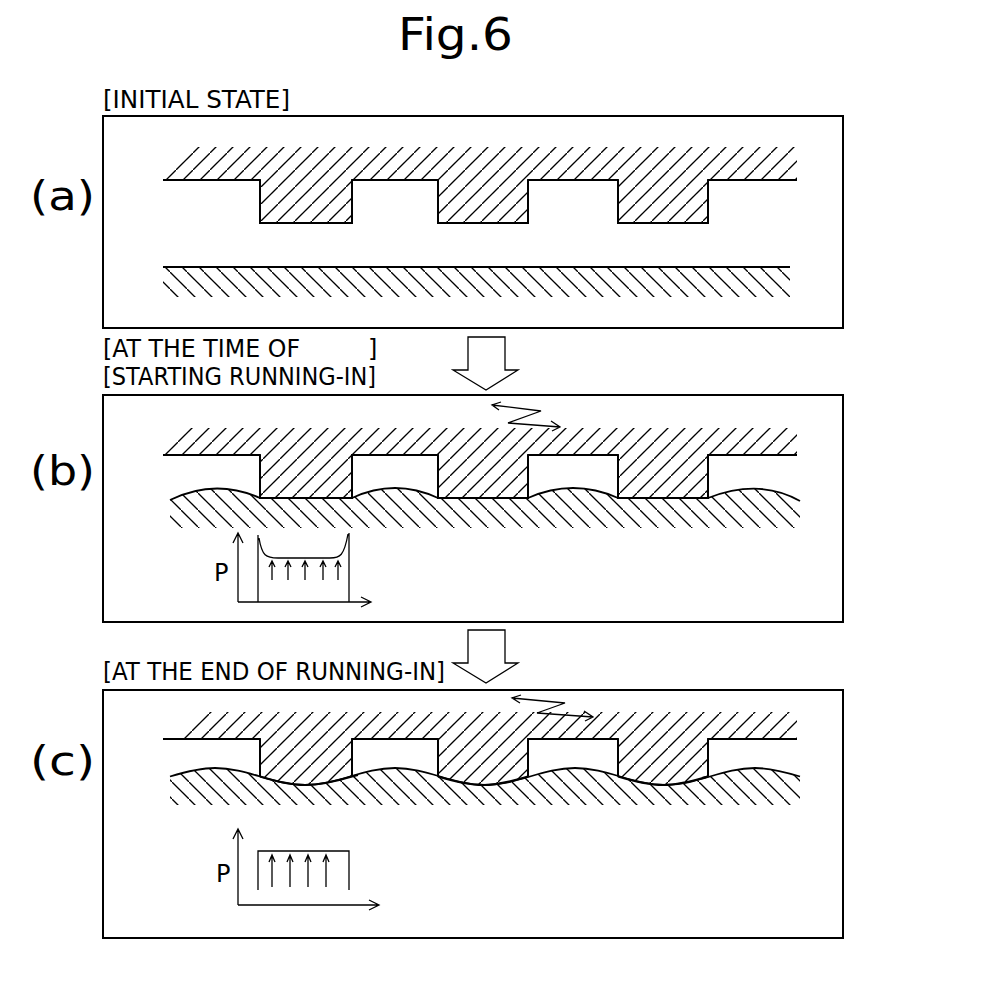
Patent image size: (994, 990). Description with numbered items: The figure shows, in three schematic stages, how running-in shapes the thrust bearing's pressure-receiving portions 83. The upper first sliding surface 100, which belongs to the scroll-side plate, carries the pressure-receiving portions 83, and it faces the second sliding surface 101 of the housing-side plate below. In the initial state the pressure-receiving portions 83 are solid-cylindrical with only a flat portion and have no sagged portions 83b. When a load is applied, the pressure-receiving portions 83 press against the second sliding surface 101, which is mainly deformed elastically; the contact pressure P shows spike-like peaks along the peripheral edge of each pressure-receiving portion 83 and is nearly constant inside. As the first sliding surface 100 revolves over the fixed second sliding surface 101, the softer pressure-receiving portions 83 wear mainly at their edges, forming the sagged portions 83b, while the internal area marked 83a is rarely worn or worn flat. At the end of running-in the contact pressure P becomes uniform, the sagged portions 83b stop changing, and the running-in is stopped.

The first sliding surface 100 is at (790, 164).
The second sliding surface 101 is at (790, 274).
The pressure-receiving portions 83 is at (260, 206).
The worn contact surface of protrusion 83a is at (303, 784).
The sagged portions 83b is at (355, 787).